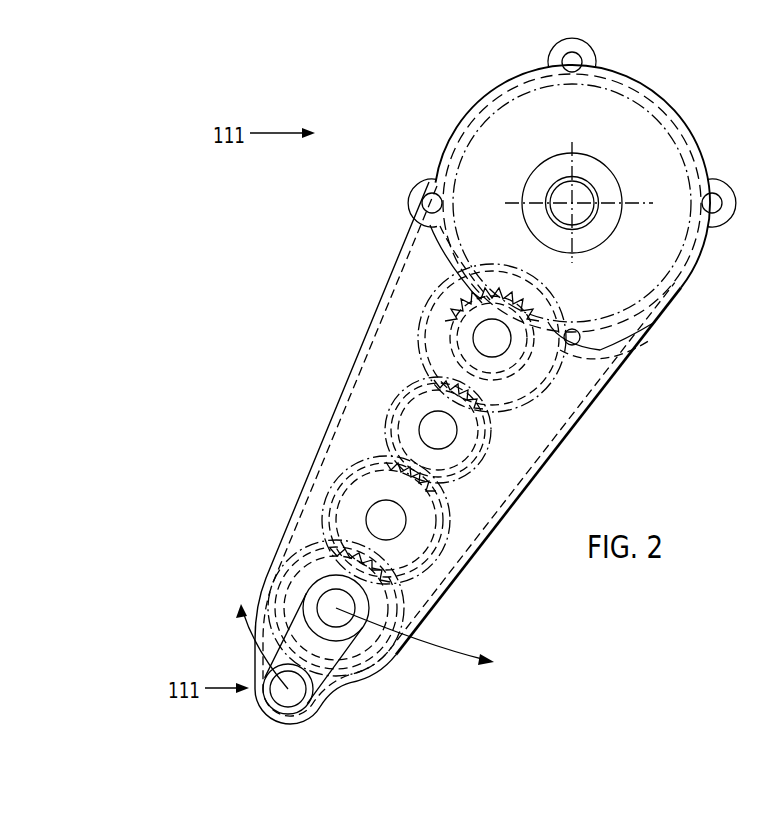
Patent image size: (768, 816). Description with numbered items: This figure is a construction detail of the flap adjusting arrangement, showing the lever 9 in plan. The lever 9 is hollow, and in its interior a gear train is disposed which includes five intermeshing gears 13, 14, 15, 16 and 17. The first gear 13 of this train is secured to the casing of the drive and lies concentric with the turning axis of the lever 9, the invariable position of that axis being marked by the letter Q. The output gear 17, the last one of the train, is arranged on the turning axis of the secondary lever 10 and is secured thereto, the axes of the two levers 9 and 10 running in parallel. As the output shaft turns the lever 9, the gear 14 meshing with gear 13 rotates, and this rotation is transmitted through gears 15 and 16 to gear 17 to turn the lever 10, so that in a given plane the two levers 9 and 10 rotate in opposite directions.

The lever 9 is at (384, 343).
The secondary lever 10 is at (322, 693).
The first gear 13 is at (682, 302).
The gear 14 is at (530, 373).
The gear 15 is at (493, 443).
The gear 16 is at (422, 527).
The output gear 17 is at (398, 612).
The position of the turning axis of the gear output shaft Q is at (592, 196).